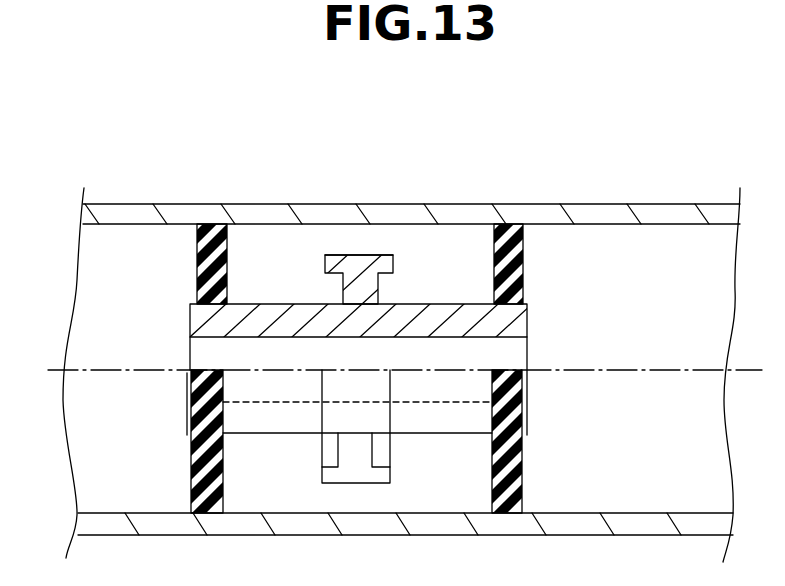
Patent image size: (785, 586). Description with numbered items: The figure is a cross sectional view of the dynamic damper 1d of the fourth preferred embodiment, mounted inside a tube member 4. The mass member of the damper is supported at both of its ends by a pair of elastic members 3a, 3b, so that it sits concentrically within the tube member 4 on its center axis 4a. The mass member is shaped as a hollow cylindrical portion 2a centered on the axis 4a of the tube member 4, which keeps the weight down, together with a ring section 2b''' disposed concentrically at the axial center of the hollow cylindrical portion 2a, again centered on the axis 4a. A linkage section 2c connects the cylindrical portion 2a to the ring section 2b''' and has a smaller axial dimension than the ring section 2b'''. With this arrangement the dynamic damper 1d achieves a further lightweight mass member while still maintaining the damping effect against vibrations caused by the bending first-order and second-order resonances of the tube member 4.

The dynamic damper 1d is at (271, 290).
The hollow cylindrical portion 2a is at (527, 322).
The ring section 2b''' is at (352, 196).
The linkage section 2c is at (361, 282).
The elastic member 3a is at (197, 278).
The elastic member 3b is at (524, 268).
The tube member 4 is at (600, 215).
The axis 4a is at (608, 372).